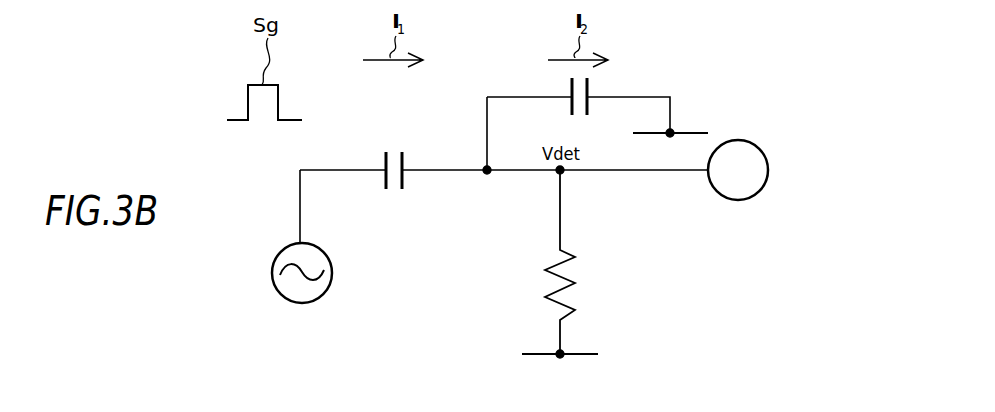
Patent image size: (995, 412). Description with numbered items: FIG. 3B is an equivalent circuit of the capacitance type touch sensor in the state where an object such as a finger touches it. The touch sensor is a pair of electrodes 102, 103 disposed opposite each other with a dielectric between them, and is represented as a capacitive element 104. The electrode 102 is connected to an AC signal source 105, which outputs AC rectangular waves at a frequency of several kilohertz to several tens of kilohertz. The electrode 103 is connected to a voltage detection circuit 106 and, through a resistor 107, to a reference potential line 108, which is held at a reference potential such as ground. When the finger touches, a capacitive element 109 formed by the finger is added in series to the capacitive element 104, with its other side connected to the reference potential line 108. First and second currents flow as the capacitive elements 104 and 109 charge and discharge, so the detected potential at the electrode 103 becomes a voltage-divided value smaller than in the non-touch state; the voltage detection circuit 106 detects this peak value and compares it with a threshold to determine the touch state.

The electrode 102 is at (383, 151).
The electrode 103 is at (405, 151).
The capacitive element 104 is at (404, 215).
The AC signal source 105 is at (302, 303).
The voltage detection circuit 106 is at (770, 170).
The resistor 107 is at (576, 277).
The reference potential line 108 is at (578, 353).
The capacitive element 109 is at (603, 80).